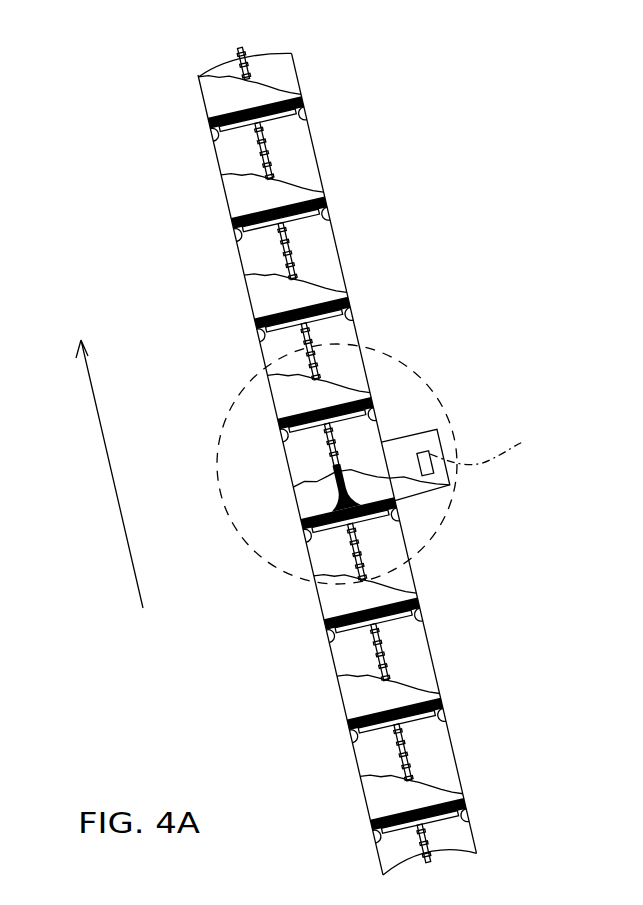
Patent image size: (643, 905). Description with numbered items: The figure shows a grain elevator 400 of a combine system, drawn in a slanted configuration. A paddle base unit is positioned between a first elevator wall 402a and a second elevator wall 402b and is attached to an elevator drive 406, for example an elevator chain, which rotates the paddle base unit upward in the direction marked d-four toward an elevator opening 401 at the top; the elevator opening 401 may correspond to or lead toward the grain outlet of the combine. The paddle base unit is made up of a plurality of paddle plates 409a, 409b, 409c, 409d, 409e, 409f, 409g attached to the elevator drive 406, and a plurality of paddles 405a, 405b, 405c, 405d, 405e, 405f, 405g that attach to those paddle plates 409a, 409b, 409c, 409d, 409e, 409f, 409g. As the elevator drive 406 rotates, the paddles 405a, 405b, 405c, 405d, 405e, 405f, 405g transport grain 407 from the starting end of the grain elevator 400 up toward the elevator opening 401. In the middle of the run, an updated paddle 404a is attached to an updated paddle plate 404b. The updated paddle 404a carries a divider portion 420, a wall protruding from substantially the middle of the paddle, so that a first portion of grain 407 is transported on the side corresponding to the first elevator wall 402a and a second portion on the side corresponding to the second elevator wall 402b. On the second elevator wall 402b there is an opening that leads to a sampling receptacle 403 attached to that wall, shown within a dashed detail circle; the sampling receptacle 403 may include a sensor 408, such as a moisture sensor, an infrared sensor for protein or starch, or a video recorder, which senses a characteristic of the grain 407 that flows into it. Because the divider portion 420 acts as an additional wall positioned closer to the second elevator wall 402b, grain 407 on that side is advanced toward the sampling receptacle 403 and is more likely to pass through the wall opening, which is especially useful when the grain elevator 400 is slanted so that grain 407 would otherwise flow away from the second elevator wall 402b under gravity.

The grain elevator 400 is at (135, 74).
The elevator opening 401 is at (265, 50).
The first elevator wall 402a is at (216, 166).
The second elevator wall 402b is at (318, 167).
The sampling receptacle 403 is at (425, 431).
The updated paddle 404a is at (313, 550).
The updated paddle plate 404b is at (385, 517).
The paddle 405a is at (212, 136).
The paddle 405b is at (237, 241).
The paddle 405c is at (262, 338).
The paddle 405d is at (283, 440).
The paddle 405e is at (333, 636).
The paddle 405f is at (360, 740).
The paddle 405g is at (380, 842).
The elevator drive 406 is at (363, 558).
The grain 407 is at (393, 603).
The sensor 408 is at (434, 455).
The paddle plate 409a is at (307, 120).
The paddle plate 409b is at (328, 214).
The paddle plate 409c is at (350, 323).
The paddle plate 409d is at (372, 420).
The paddle plate 409e is at (403, 621).
The paddle plate 409f is at (443, 722).
The paddle plate 409g is at (467, 820).
The divider portion 420 is at (304, 505).